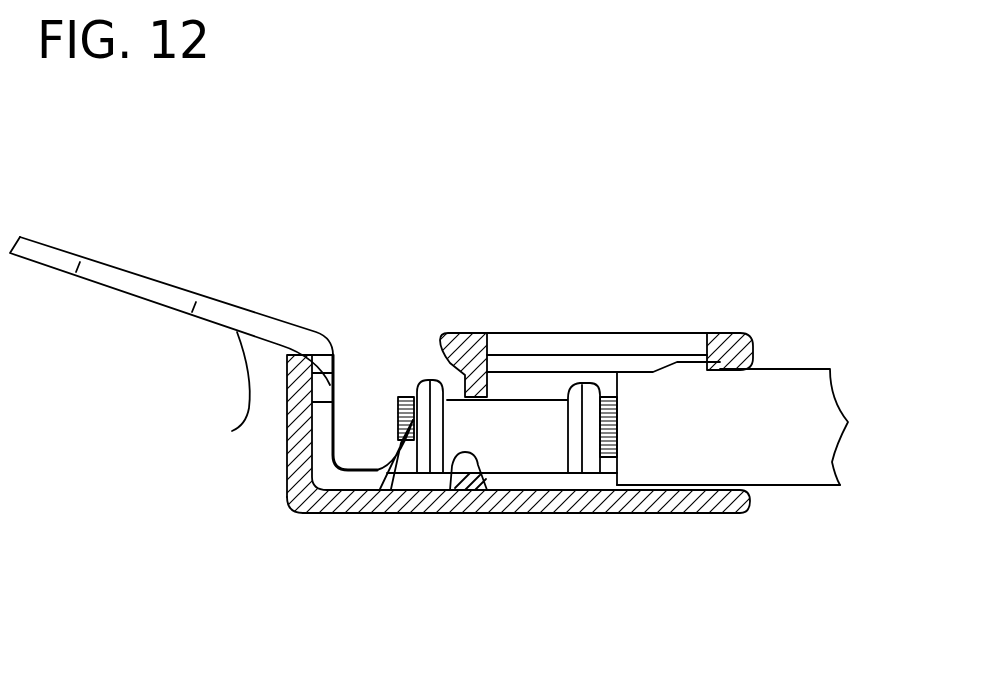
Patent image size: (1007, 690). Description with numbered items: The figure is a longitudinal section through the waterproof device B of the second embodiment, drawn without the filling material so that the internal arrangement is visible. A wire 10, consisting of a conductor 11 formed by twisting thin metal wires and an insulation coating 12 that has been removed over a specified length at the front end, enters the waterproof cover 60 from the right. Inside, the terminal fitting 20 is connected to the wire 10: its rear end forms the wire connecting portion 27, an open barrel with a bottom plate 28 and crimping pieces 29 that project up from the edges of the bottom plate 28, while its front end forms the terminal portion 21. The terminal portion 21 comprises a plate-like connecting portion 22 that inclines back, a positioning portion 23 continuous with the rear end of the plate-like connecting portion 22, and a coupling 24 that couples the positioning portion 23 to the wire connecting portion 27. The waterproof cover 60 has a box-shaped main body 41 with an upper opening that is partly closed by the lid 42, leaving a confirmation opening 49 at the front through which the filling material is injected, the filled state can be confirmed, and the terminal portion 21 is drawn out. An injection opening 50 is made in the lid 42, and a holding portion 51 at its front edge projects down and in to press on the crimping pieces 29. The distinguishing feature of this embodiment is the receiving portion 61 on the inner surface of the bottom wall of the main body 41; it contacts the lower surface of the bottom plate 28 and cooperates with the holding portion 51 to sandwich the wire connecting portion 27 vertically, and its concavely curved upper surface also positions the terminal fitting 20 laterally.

The wire 10 is at (813, 497).
The conductor 11 is at (388, 489).
The insulation coating 12 is at (710, 463).
The terminal fitting 20 is at (314, 250).
The terminal portion 21 is at (200, 415).
The plate-like connecting portion 22 is at (233, 431).
The positioning portion 23 is at (317, 437).
The coupling 24 is at (333, 514).
The wire connecting portion 27 is at (570, 565).
The bottom plate 28 is at (495, 475).
The crimping pieces 29 is at (555, 437).
The main body 41 is at (633, 505).
The lid 42 is at (720, 333).
The confirmation opening 49 is at (440, 347).
The injection opening 50 is at (497, 333).
The holding portion 51 is at (483, 380).
The waterproof cover 60 is at (773, 290).
The receiving portion 61 is at (451, 493).
The waterproof device B is at (700, 217).